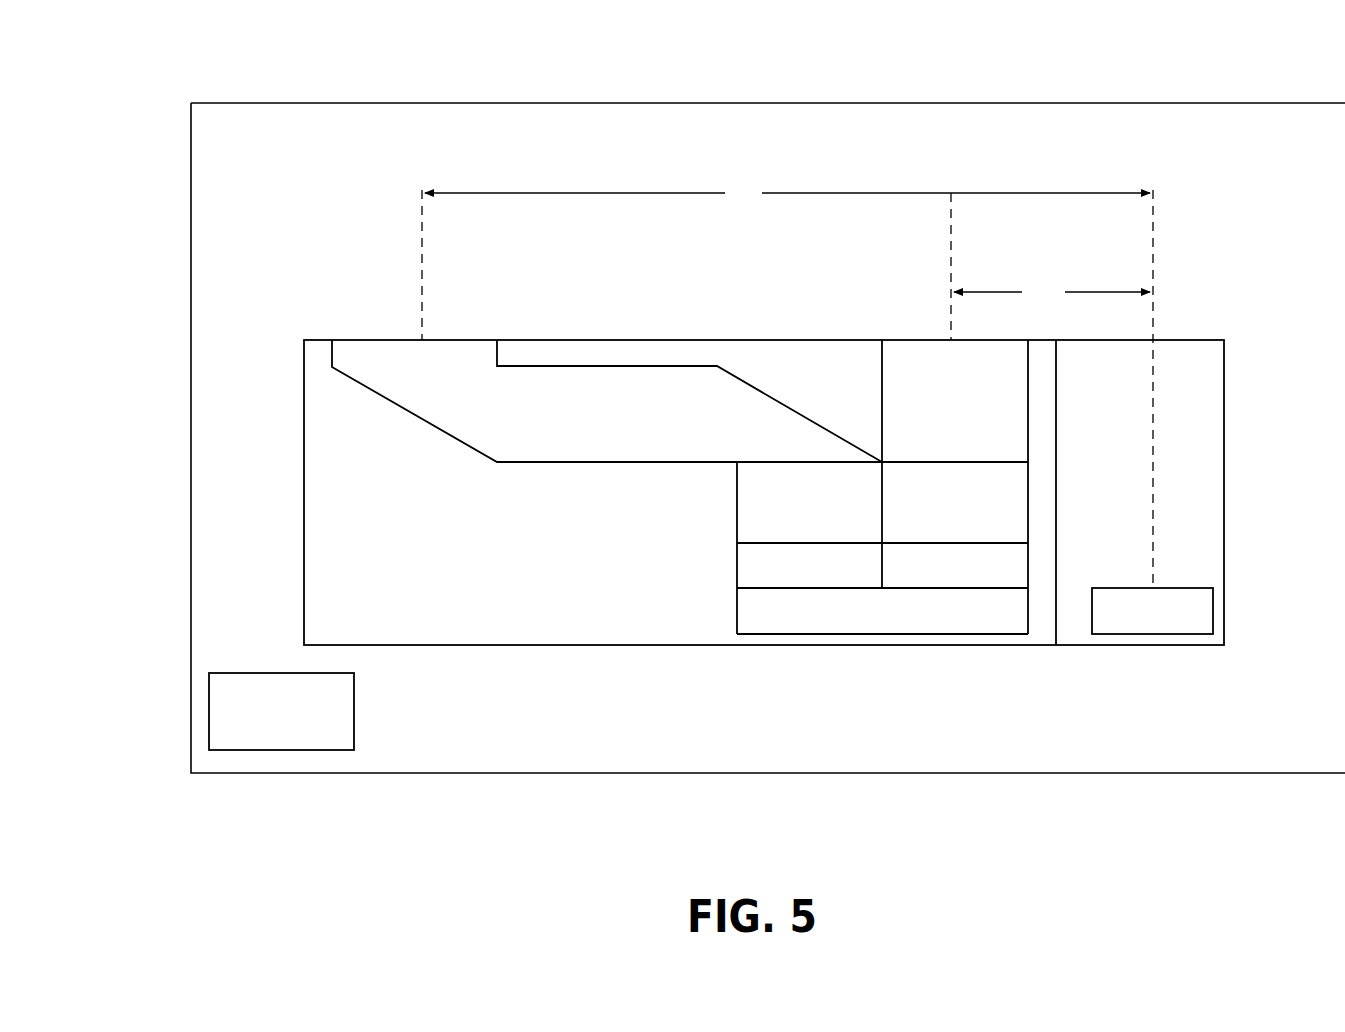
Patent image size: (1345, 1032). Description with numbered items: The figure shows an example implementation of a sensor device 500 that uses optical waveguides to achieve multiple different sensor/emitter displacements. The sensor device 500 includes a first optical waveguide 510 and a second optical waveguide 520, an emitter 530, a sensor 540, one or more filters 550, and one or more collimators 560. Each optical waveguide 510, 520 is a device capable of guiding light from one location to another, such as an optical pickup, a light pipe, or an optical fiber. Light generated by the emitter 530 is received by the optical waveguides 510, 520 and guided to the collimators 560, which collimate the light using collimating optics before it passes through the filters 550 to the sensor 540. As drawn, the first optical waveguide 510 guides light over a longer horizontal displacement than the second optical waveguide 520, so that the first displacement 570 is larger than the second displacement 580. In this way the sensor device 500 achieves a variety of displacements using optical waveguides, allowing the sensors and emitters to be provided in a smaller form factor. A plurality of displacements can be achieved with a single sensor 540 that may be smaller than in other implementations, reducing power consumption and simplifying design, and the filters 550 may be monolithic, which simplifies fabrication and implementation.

The sensor device 500 is at (242, 41).
The optical waveguide 510 is at (474, 337).
The optical waveguide 520 is at (921, 339).
The emitter 530 is at (1158, 636).
The sensor 540 is at (915, 636).
The filters 550 is at (892, 575).
The collimators 560 is at (878, 471).
The displacement D1 570 is at (746, 181).
The displacement D2 580 is at (1016, 277).